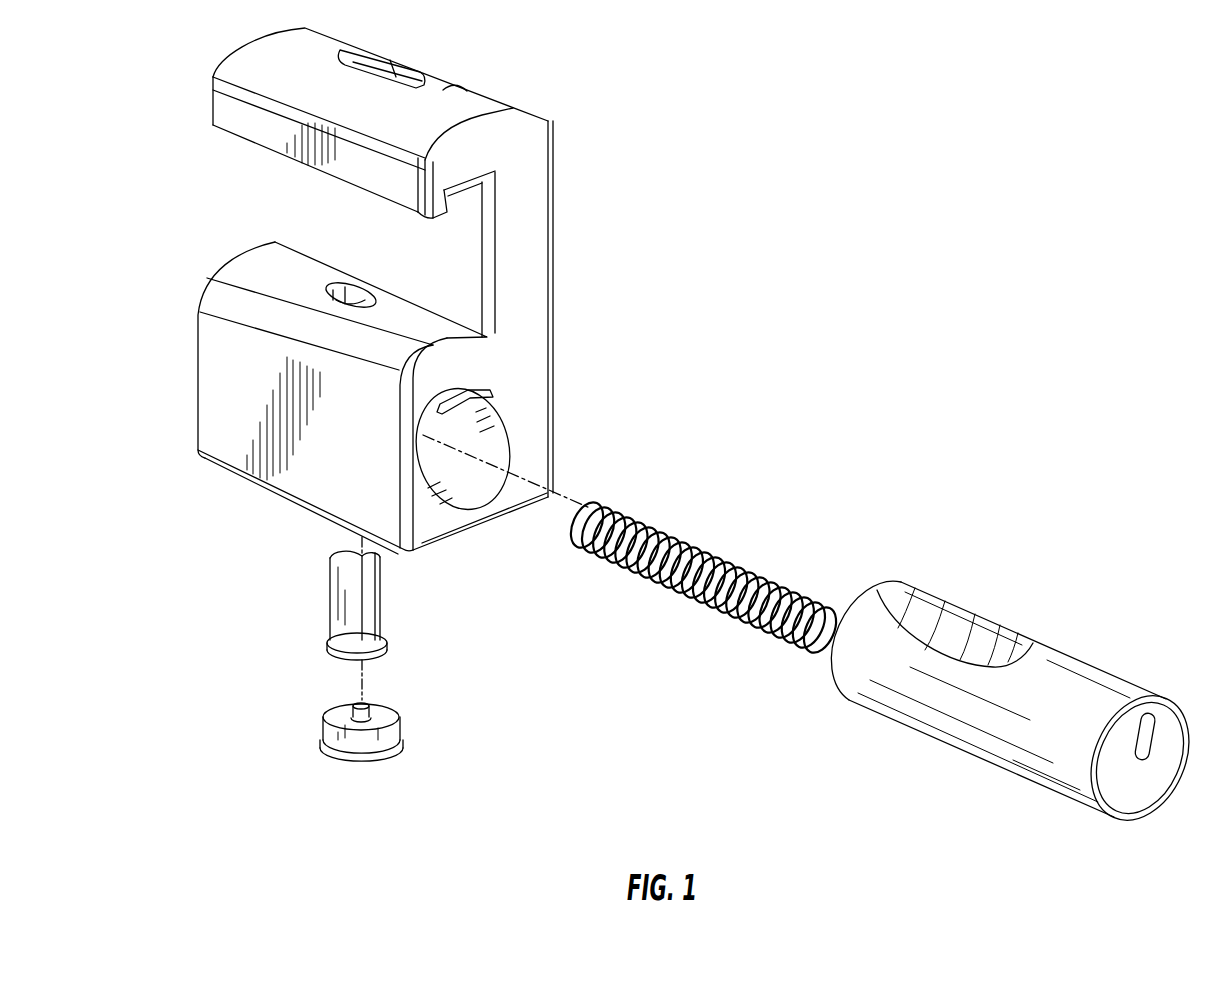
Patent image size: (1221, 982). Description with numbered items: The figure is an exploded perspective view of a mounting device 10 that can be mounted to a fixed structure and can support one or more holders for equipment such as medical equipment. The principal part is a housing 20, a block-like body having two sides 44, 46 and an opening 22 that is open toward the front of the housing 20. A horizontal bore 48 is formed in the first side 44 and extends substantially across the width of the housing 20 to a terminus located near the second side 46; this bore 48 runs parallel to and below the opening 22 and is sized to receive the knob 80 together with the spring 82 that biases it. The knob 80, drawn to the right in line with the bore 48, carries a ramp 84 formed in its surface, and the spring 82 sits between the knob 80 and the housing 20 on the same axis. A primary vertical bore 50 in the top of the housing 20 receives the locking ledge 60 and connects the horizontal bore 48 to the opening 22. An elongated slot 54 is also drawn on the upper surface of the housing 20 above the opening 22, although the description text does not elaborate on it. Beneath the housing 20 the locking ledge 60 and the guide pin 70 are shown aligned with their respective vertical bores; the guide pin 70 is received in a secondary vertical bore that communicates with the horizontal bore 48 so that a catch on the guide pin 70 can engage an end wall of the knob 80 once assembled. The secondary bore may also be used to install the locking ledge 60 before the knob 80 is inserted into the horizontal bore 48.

The mounting device 10 is at (842, 236).
The housing 20 is at (556, 294).
The opening 22 is at (448, 255).
The first side 44 is at (506, 404).
The second side 46 is at (197, 378).
The horizontal bore 48 is at (501, 449).
The primary vertical bore 50 is at (352, 287).
The slot 54 is at (436, 80).
The locking ledge 60 is at (314, 605).
The guide pin 70 is at (310, 718).
The knob 80 is at (1115, 662).
The spring 82 is at (722, 540).
The ramp 84 is at (964, 615).